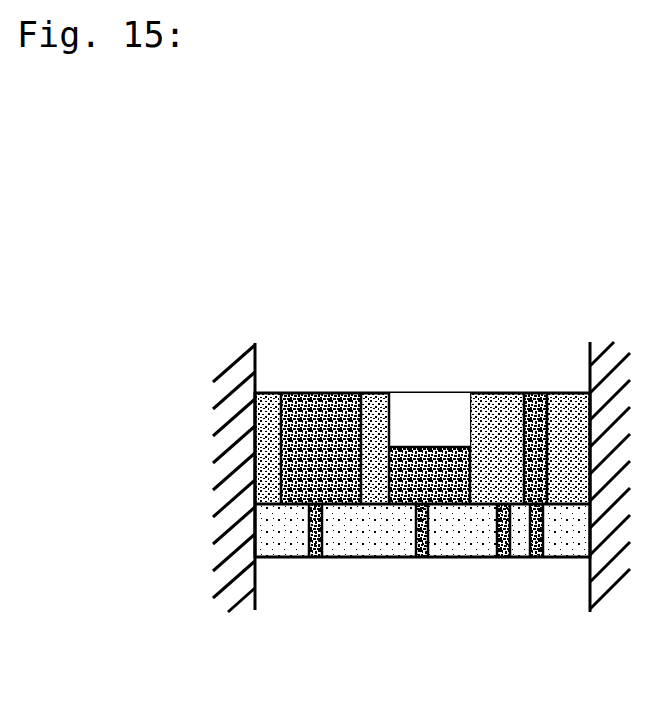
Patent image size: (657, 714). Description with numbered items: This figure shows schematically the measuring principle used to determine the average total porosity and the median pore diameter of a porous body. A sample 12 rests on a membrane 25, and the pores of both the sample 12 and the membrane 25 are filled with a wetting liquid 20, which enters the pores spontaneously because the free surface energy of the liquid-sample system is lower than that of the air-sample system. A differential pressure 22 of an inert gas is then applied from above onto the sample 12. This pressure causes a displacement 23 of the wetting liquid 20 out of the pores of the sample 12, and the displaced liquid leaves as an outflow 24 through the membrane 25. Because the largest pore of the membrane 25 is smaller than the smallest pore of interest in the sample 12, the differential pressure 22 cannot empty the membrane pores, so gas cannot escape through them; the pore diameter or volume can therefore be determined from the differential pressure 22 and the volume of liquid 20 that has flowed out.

The sample 12 is at (268, 508).
The wetting liquid 20 is at (446, 495).
The differential pressure 22 is at (429, 366).
The displacement 23 is at (389, 382).
The outflow 24 is at (423, 558).
The membrane 25 is at (549, 582).